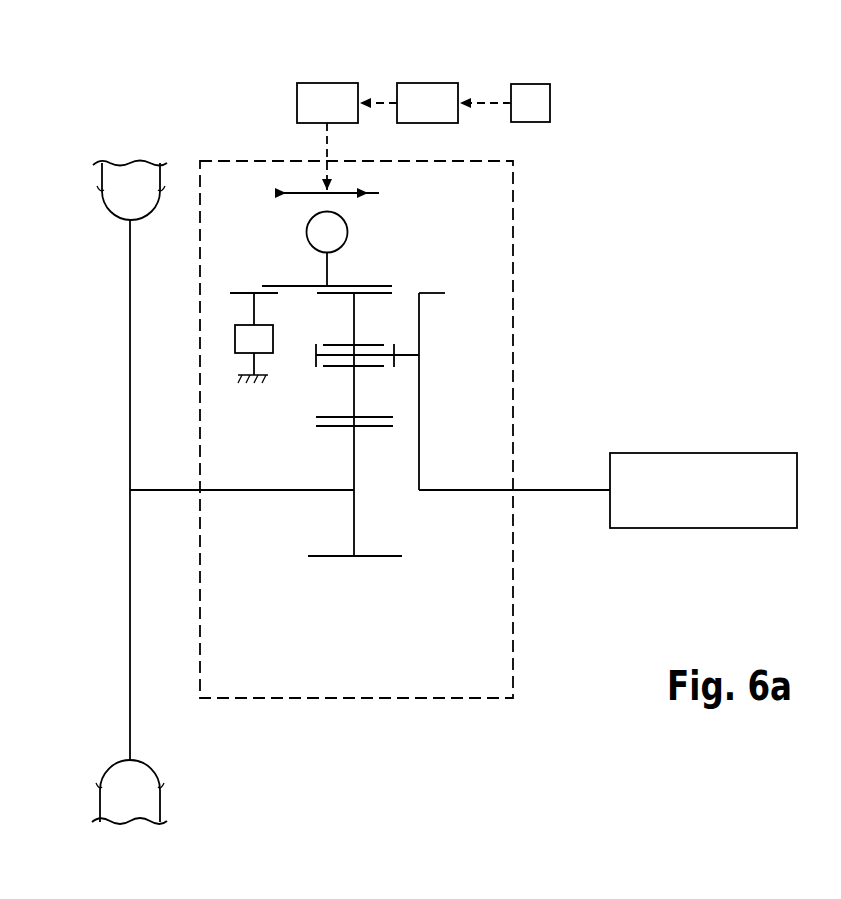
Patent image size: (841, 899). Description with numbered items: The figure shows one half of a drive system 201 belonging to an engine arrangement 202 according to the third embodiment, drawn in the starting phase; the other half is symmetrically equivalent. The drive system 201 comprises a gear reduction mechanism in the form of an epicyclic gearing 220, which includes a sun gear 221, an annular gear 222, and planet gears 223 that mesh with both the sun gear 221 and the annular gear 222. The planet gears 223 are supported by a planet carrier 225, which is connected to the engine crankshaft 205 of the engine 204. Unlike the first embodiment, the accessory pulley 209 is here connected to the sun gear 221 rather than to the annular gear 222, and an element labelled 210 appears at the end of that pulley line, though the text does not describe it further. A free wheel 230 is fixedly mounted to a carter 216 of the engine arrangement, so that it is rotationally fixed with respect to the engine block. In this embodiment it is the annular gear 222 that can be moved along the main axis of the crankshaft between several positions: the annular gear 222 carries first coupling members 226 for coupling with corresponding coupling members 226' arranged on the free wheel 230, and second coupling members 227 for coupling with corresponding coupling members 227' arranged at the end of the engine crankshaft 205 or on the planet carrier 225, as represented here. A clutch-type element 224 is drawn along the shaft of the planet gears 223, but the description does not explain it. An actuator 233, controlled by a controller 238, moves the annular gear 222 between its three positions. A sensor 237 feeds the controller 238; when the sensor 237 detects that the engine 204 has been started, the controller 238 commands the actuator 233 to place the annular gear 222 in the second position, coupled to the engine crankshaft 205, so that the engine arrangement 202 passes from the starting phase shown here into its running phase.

The drive system 201 is at (359, 710).
The engine arrangement 202 is at (588, 226).
The engine 204 is at (725, 502).
The engine crankshaft 205 is at (563, 490).
The accessory pulley 209 is at (130, 377).
The input coupling 210 is at (115, 805).
The carter 216 is at (258, 381).
The epicyclic gearing 220 is at (466, 366).
The sun gear 221 is at (354, 527).
The annular gear 222 is at (347, 285).
The planet gears 223 is at (356, 306).
The clutch 224 is at (344, 357).
The planet carrier 225 is at (419, 462).
The first coupling members 226 is at (324, 261).
The coupling members 226' is at (245, 251).
The second coupling members 227 is at (374, 264).
The coupling members 227' is at (455, 266).
The free wheel 230 is at (236, 340).
The actuator 233 is at (310, 104).
The sensor 237 is at (525, 98).
The controller 238 is at (433, 100).